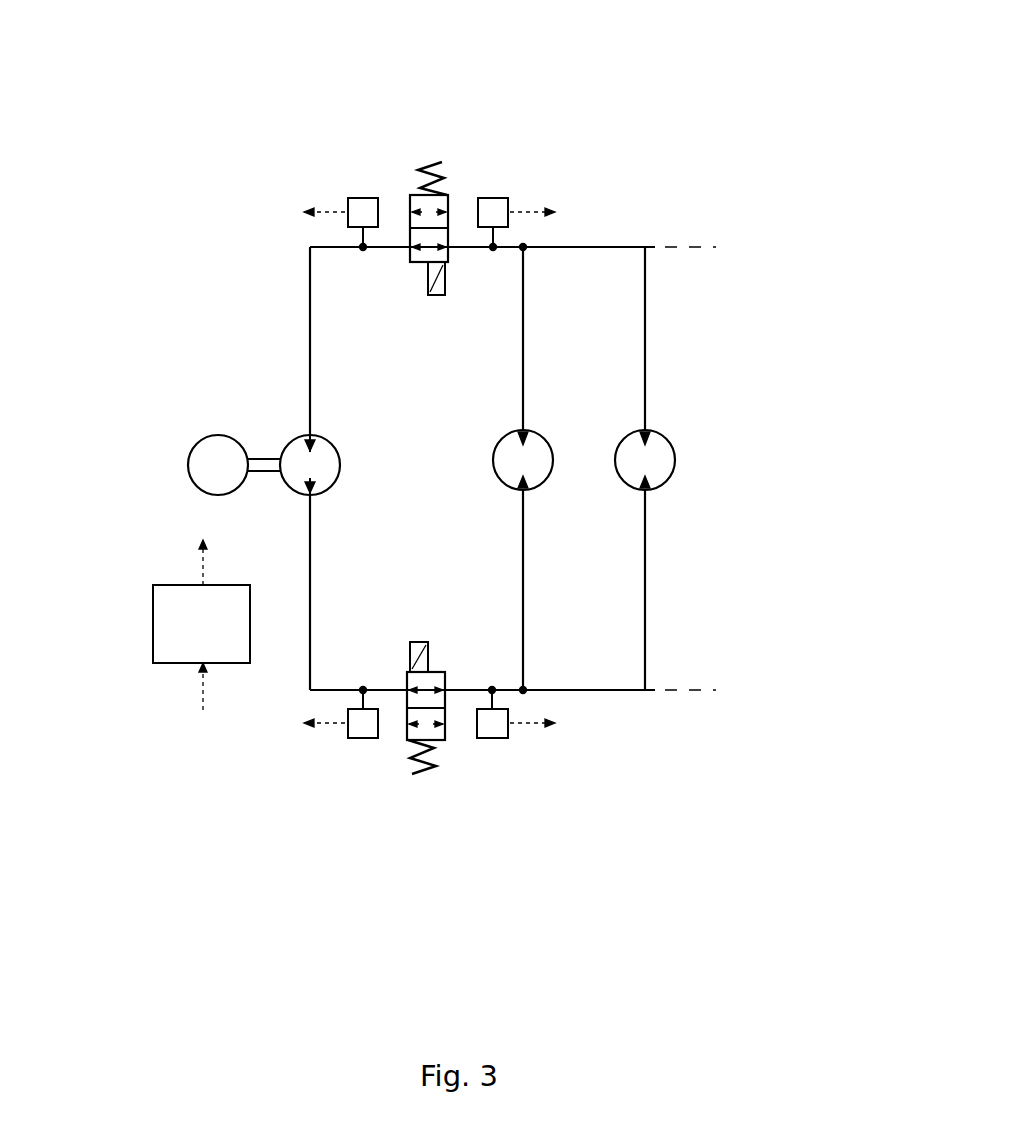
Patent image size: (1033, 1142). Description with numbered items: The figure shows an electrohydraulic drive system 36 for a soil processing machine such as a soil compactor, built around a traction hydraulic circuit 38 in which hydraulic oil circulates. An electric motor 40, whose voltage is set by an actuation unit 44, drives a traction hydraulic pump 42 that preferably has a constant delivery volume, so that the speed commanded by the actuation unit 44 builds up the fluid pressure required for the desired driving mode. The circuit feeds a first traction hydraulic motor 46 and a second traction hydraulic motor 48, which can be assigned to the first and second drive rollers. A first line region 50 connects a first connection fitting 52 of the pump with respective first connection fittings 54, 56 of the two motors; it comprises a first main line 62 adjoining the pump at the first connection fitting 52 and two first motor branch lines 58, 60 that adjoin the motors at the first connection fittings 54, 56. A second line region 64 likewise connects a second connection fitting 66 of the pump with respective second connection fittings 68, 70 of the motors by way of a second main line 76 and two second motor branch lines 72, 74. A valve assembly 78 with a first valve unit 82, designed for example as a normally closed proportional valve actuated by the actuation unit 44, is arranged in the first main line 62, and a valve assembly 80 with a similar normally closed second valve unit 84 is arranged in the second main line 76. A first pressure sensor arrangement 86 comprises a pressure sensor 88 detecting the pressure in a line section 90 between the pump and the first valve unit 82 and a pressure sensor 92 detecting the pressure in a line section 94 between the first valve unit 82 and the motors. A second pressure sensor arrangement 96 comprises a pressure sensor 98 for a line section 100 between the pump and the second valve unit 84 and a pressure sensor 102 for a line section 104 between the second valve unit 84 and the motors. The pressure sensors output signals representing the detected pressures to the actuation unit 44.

The electrohydraulic drive system 36 is at (590, 108).
The traction hydraulic circuit 38 is at (690, 183).
The electric motor 40 is at (188, 465).
The traction hydraulic pump 42 is at (280, 490).
The actuation unit 44 is at (153, 625).
The first traction hydraulic motor 46 is at (500, 440).
The second traction hydraulic motor 48 is at (677, 440).
The first line region 50 is at (308, 290).
The first connection fitting 52 is at (320, 440).
The first connection fitting 54 is at (526, 430).
The first connection fitting 56 is at (647, 432).
The first motor branch line 58 is at (521, 328).
The first motor branch line 60 is at (648, 322).
The first main line 62 is at (312, 310).
The second line region 64 is at (306, 675).
The second connection fitting 66 is at (316, 500).
The second connection fitting 68 is at (514, 496).
The second connection fitting 70 is at (650, 495).
The second motor branch line 72 is at (525, 575).
The second motor branch line 74 is at (648, 585).
The second main line 76 is at (312, 613).
The valve assembly 78 is at (437, 143).
The valve assembly 80 is at (447, 790).
The first valve unit 82 is at (449, 196).
The second valve unit 84 is at (449, 742).
The first pressure sensor arrangement 86 is at (367, 172).
The pressure sensor 88 is at (348, 198).
The line section 90 is at (308, 377).
The pressure sensor 92 is at (508, 200).
The line section 94 is at (552, 247).
The second pressure sensor arrangement 96 is at (382, 776).
The pressure sensor 98 is at (357, 742).
The line section 100 is at (308, 568).
The pressure sensor 102 is at (510, 738).
The line section 104 is at (530, 688).